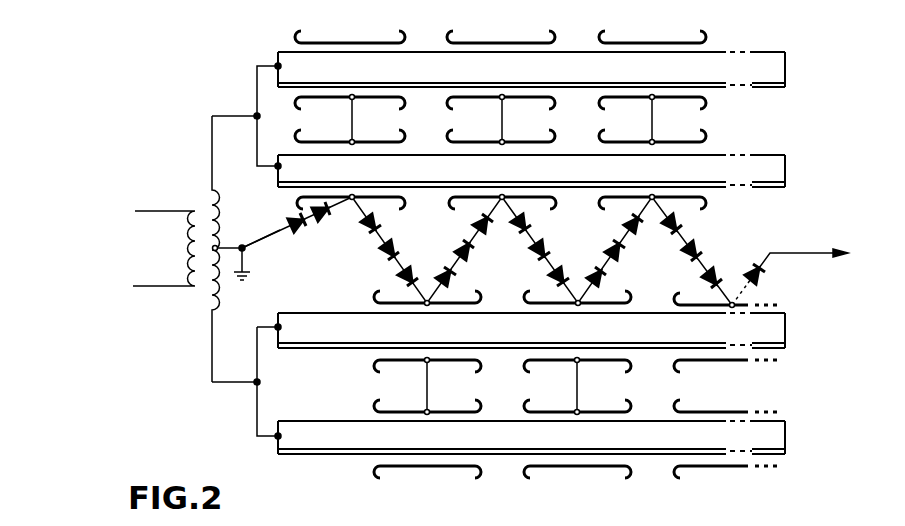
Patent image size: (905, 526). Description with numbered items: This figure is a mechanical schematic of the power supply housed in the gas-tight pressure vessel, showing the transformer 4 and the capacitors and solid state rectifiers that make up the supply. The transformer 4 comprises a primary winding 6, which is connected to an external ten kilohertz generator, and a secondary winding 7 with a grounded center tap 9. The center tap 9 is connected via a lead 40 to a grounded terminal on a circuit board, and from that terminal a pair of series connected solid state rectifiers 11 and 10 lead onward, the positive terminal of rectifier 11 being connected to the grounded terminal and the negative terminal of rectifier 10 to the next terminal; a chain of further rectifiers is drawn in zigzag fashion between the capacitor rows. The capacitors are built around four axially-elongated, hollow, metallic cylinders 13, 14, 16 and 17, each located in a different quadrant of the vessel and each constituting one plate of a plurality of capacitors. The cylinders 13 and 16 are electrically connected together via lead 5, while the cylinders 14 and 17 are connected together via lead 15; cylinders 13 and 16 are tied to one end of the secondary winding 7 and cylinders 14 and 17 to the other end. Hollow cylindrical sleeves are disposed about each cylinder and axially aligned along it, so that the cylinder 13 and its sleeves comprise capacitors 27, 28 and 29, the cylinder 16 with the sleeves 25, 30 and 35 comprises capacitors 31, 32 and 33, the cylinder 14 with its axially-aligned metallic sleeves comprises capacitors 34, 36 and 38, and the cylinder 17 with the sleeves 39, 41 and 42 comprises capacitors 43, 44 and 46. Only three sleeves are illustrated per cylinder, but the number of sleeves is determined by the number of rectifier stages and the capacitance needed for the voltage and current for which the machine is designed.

The transformer 4 is at (187, 249).
The lead 5 is at (257, 353).
The primary winding 6 is at (186, 206).
The secondary winding 7 is at (211, 194).
The grounded center tap 9 is at (216, 247).
The solid state rectifier 10 is at (327, 221).
The solid state rectifier 11 is at (302, 238).
The elongated cylinder 13 is at (299, 311).
The elongated cylinder 14 is at (278, 154).
The lead 15 is at (257, 85).
The elongated cylinder 16 is at (294, 426).
The elongated cylinder 17 is at (278, 52).
The sleeve 25 is at (421, 468).
The capacitor 27 is at (430, 329).
The capacitor 28 is at (580, 329).
The capacitor 29 is at (725, 329).
The sleeve 30 is at (578, 468).
The capacitor 31 is at (430, 437).
The capacitor 32 is at (580, 437).
The capacitor 33 is at (725, 437).
The capacitor 34 is at (355, 171).
The sleeve 35 is at (717, 468).
The capacitor 36 is at (505, 171).
The capacitor 38 is at (653, 171).
The sleeve 39 is at (352, 43).
The lead 40 is at (271, 233).
The sleeve 41 is at (490, 43).
The sleeve 42 is at (641, 43).
The capacitor 43 is at (355, 68).
The capacitor 44 is at (505, 68).
The capacitor 46 is at (653, 68).